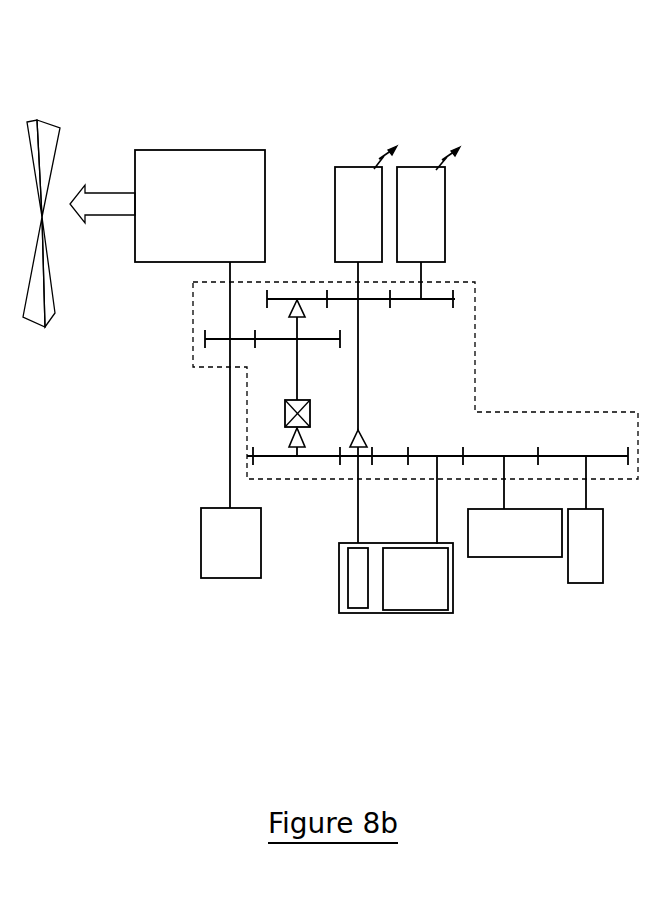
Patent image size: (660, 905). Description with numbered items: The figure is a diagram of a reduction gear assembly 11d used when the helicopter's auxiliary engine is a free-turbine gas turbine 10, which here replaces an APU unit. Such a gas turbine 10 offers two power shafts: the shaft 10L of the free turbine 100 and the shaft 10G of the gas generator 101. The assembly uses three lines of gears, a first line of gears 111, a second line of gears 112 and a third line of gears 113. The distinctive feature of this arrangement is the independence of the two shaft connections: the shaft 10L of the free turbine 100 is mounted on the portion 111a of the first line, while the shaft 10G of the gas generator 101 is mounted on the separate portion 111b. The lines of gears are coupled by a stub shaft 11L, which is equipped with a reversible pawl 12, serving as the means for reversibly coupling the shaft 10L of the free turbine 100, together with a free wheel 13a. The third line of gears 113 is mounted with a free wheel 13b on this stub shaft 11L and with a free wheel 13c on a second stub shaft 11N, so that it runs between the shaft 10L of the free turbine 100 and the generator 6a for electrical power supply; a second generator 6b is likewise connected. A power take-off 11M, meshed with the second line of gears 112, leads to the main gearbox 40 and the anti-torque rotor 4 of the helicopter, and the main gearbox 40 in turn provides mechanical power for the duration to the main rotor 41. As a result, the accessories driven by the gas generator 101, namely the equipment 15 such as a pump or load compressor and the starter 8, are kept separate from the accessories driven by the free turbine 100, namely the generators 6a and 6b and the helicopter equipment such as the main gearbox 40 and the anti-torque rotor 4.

The main rotor 41 is at (46, 120).
The main gearbox 40 is at (207, 150).
The generator 6a is at (350, 167).
The generator 6b is at (420, 167).
The reduction gear assembly 11d is at (473, 282).
The third line of gears 113 is at (462, 299).
The line of gears 112 is at (198, 339).
The free wheel 13b is at (289, 306).
The stub shaft 11L is at (298, 376).
The second stub shaft 11N is at (359, 376).
The power take-off 11M is at (229, 392).
The free wheel 13a is at (289, 442).
The pawl 12 is at (311, 406).
The free wheel 13c is at (366, 440).
The portion 111a is at (384, 454).
The portion 111b is at (400, 455).
The line of gears 111 is at (240, 456).
The shaft of the gas generator 10G is at (437, 507).
The shaft of the free turbine 10L is at (359, 538).
The anti-torque rotor 4 is at (232, 578).
The free turbine 100 is at (341, 598).
The gas generator 101 is at (458, 598).
The gas turbine 10 is at (399, 607).
The equipment 15 is at (543, 558).
The starter 8 is at (580, 583).